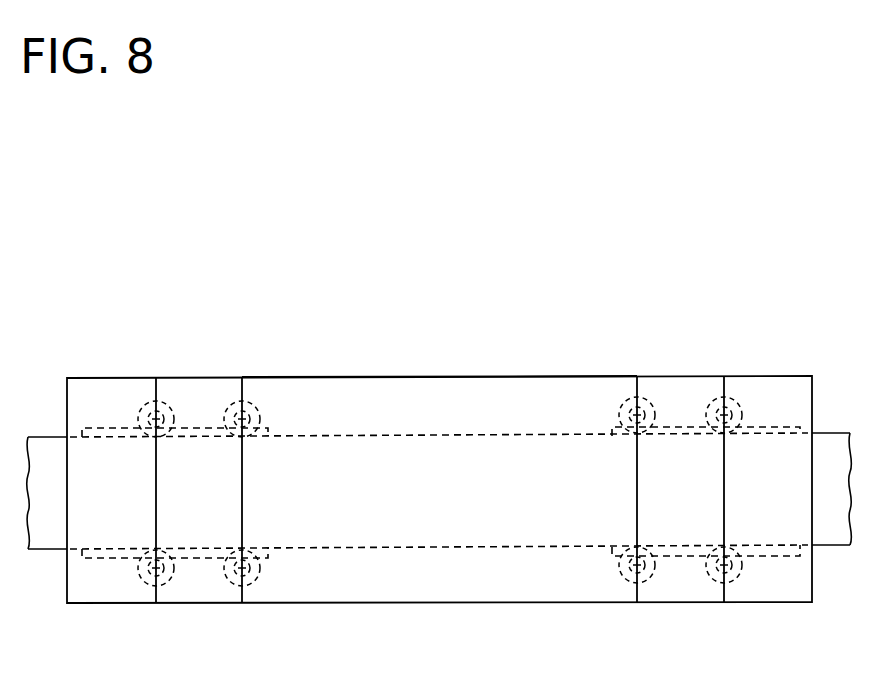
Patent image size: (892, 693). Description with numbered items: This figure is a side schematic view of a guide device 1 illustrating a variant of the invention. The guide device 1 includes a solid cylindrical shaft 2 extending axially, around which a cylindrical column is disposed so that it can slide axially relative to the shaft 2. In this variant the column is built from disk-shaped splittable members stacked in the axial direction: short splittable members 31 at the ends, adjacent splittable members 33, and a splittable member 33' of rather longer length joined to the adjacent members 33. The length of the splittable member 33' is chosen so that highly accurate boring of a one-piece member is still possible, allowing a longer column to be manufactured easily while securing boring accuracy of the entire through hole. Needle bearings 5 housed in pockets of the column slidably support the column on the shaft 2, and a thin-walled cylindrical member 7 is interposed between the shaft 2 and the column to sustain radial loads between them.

The guide device 1 is at (330, 297).
The shaft 2 is at (57, 540).
The splittable member 31 is at (113, 390).
The splittable member 33 is at (439, 452).
The splittable member 33' is at (439, 344).
The needle bearing 5 is at (163, 583).
The cylindrical member 7 is at (695, 555).